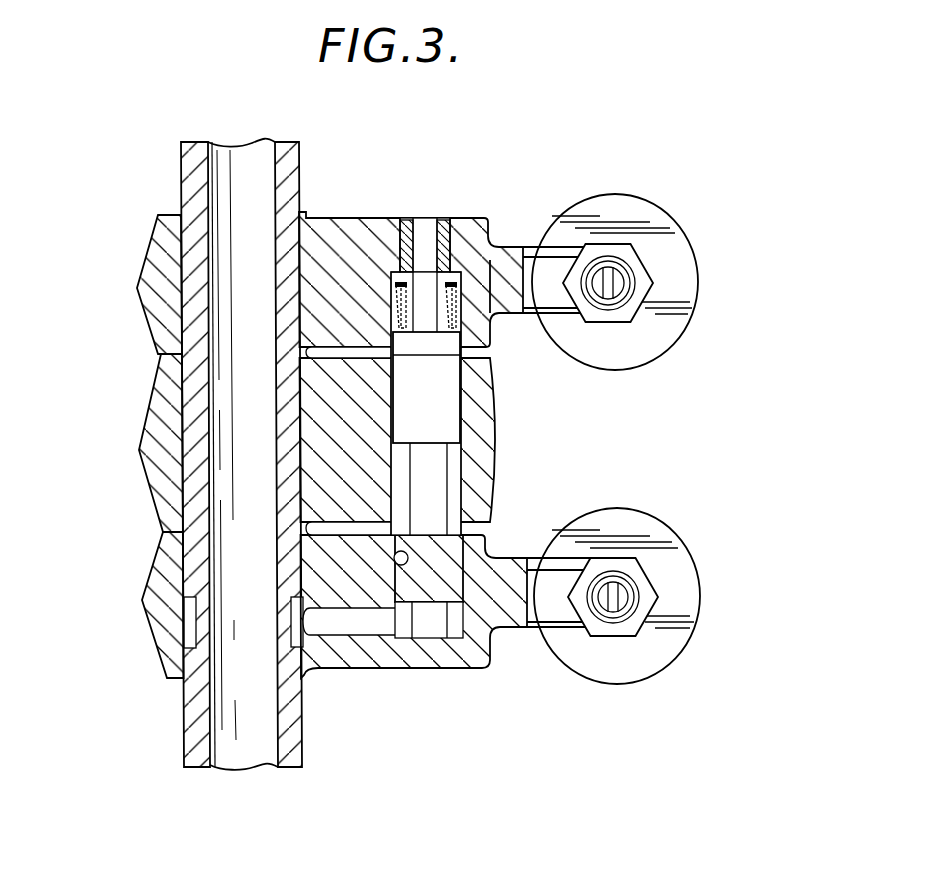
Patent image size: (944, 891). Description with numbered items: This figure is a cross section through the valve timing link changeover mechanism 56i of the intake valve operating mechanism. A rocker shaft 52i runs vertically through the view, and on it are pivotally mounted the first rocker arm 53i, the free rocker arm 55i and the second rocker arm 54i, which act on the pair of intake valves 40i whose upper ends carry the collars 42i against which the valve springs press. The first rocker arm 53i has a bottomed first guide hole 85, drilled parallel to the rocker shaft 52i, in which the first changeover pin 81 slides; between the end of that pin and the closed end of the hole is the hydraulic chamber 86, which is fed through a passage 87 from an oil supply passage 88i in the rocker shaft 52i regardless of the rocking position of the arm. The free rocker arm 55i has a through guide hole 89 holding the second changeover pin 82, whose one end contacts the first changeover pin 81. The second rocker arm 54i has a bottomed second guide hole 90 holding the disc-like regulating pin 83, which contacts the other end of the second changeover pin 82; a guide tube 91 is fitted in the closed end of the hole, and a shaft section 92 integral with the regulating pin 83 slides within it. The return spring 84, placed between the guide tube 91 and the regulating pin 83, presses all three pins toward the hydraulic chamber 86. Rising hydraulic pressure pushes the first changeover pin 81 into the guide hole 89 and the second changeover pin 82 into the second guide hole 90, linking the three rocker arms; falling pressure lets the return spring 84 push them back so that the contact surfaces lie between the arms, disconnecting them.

The intake valve 40i is at (668, 374).
The collar 42i is at (688, 270).
The rocker shaft 52i is at (192, 738).
The first rocker arm 53i is at (170, 660).
The second rocker arm 54i is at (157, 251).
The free rocker arm 55i is at (157, 490).
The valve timing link changeover mechanism 56i is at (472, 406).
The first changeover pin 81 is at (452, 560).
The second changeover pin 82 is at (453, 375).
The regulating pin 83 is at (422, 347).
The return spring 84 is at (462, 288).
The first guide hole 85 is at (394, 558).
The hydraulic chamber 86 is at (460, 630).
The passage 87 is at (377, 627).
The oil supply passage 88i is at (263, 735).
The guide hole 89 is at (463, 465).
The second guide hole 90 is at (530, 242).
The guide tube 91 is at (442, 265).
The shaft section 92 is at (424, 258).